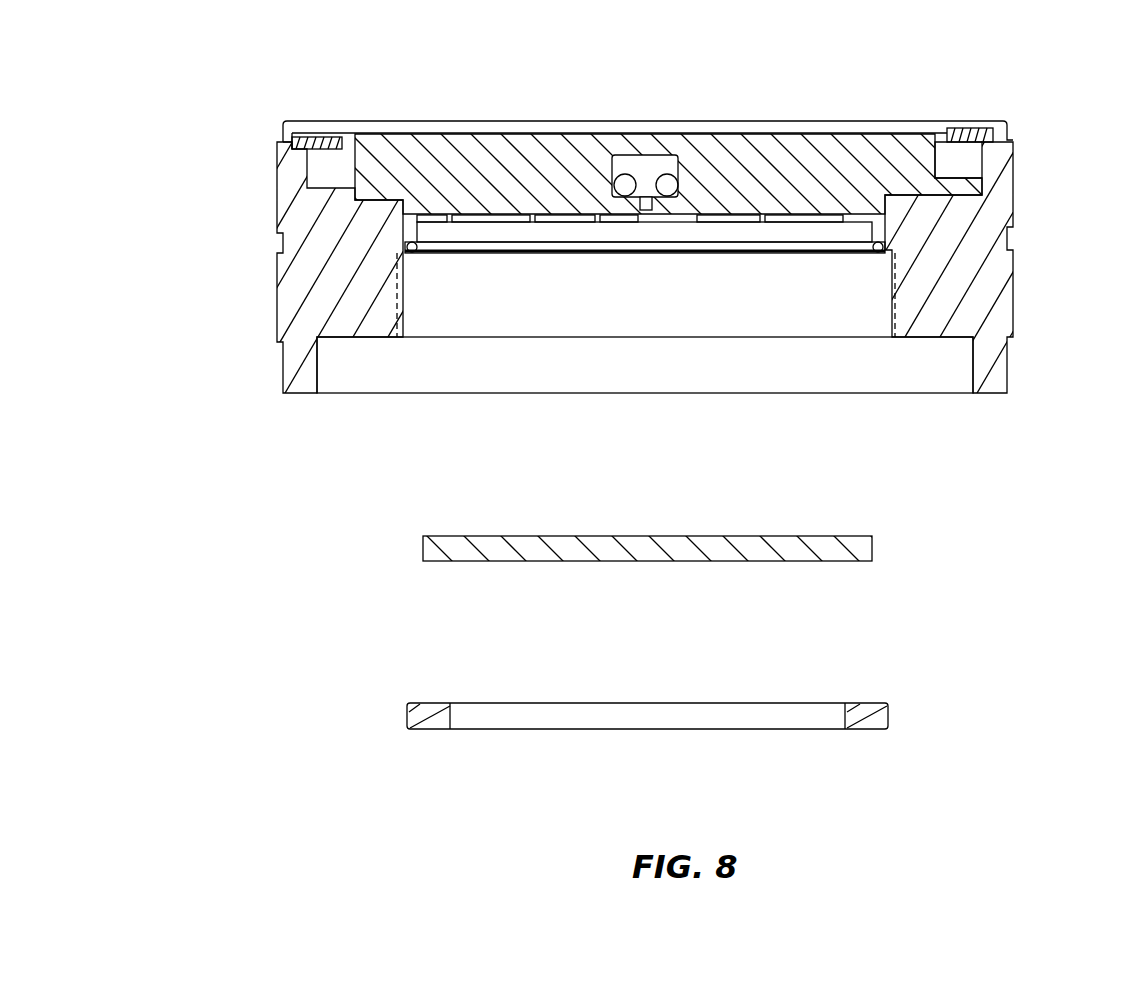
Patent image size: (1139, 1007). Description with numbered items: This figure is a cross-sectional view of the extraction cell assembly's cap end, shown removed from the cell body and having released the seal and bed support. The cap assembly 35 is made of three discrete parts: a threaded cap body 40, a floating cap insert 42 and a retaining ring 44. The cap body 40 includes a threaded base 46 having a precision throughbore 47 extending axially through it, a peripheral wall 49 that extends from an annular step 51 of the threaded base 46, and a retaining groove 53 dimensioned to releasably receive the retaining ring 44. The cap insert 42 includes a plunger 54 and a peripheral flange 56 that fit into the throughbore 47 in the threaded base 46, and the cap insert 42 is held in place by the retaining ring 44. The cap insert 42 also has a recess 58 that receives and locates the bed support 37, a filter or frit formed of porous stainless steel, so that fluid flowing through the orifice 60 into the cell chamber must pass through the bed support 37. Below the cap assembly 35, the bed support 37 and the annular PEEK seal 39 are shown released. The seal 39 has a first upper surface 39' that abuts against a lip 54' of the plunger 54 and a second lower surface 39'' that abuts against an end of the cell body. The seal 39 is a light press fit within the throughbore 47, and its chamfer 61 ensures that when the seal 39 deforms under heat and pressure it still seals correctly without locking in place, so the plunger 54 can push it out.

The cap assembly 35 is at (1027, 138).
The bed support 37 is at (820, 545).
The seal 39 is at (678, 691).
The first upper surface 39' is at (441, 678).
The second lower surface 39'' is at (462, 758).
The threaded cap body 40 is at (1006, 203).
The floating cap insert 42 is at (456, 150).
The retaining ring 44 is at (963, 130).
The threaded base 46 is at (930, 289).
The precision throughbore 47 is at (405, 240).
The peripheral wall 49 is at (1000, 165).
The annular step 51 is at (305, 196).
The retaining groove 53 is at (314, 136).
The plunger 54 is at (372, 160).
The lip 54' is at (651, 267).
The peripheral flange 56 is at (945, 176).
The recess 58 is at (470, 232).
The orifice 60 is at (650, 195).
The chamfer 61 is at (406, 710).